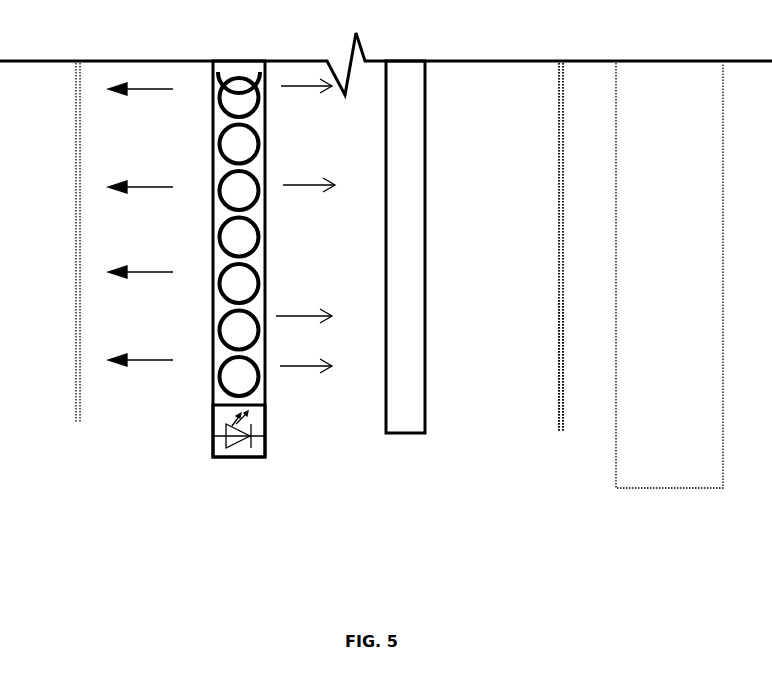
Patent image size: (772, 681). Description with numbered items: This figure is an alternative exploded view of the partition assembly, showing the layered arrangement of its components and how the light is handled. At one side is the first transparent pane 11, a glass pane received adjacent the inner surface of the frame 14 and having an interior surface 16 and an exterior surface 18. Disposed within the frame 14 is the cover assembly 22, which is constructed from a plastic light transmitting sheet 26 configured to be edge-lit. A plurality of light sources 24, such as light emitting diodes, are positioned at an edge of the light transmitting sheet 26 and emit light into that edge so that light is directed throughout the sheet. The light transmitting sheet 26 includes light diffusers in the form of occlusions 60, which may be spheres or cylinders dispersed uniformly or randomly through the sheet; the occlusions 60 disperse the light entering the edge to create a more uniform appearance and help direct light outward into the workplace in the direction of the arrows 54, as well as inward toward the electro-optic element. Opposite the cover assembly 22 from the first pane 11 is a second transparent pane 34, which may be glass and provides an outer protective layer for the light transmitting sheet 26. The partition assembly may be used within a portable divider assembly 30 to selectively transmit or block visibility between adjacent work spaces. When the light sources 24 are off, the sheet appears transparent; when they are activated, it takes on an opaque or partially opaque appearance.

The first transparent pane 11 is at (559, 412).
The frame 14 is at (647, 481).
The interior surface 16 is at (559, 309).
The exterior surface 18 is at (563, 298).
The cover assembly 22 is at (233, 280).
The light sources 24 is at (213, 437).
The light transmitting sheet 26 is at (233, 259).
The divider assembly 30 is at (401, 424).
The second transparent pane 34 is at (76, 376).
The arrows 54 is at (147, 89).
The occlusions 60 is at (223, 68).